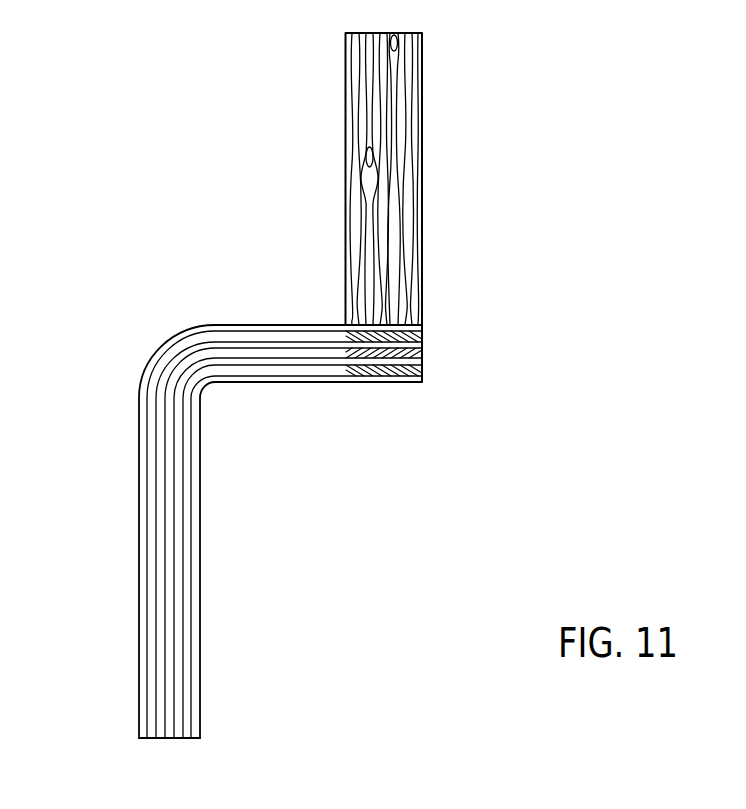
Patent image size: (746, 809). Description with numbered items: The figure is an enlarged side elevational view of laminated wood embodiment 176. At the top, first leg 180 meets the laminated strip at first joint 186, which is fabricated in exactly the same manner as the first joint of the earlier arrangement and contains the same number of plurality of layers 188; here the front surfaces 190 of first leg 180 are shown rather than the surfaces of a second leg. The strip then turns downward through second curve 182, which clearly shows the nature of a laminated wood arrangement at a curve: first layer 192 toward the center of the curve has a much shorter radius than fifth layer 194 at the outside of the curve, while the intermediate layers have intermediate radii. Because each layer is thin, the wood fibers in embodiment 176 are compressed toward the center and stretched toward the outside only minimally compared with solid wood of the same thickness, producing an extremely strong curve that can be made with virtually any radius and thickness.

The embodiment 176 is at (200, 249).
The first leg 180 is at (422, 160).
The second curve 182 is at (153, 349).
The first joint 186 is at (402, 392).
The plurality of layers 188 is at (463, 346).
The front surfaces 190 is at (422, 337).
The first layer 192 is at (205, 388).
The fifth layer 194 is at (175, 333).